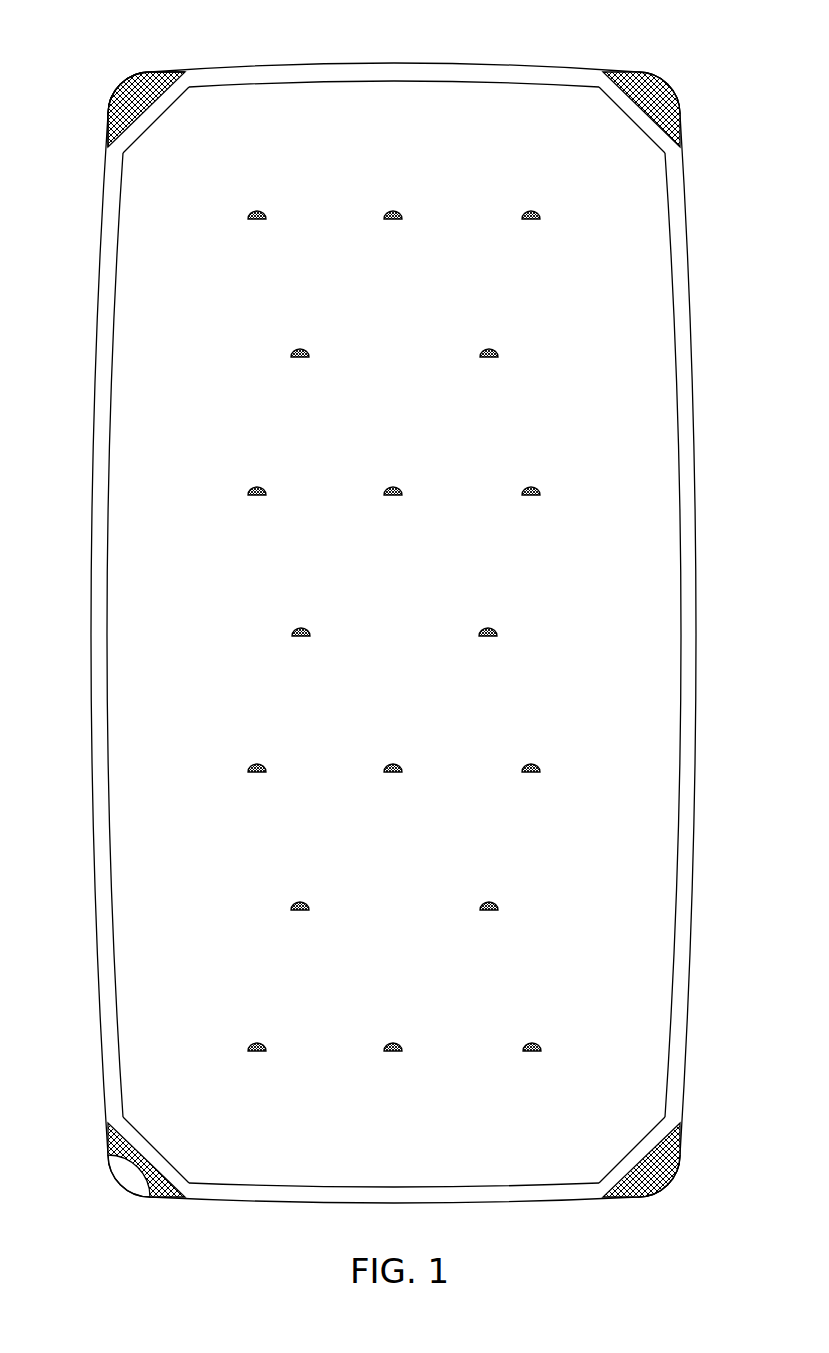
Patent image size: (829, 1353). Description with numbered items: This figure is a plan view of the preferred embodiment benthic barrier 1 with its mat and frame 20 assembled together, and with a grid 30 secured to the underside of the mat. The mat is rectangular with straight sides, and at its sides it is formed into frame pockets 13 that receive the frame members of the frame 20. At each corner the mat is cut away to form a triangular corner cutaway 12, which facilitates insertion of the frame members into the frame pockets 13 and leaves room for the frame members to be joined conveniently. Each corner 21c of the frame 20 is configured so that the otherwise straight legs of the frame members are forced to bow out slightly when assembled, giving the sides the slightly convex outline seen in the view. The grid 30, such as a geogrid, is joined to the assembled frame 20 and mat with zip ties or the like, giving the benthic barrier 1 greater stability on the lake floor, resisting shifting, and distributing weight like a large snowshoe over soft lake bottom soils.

The benthic barrier 1 is at (412, 630).
The corner cutaway 12 is at (128, 151).
The frame pockets 13 is at (372, 68).
The frame 20 is at (104, 102).
The corner 21c is at (113, 87).
The grid 30 is at (147, 76).